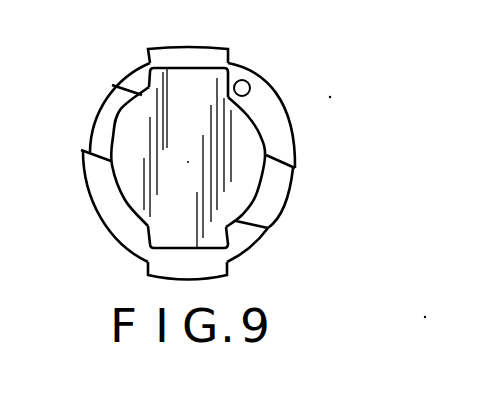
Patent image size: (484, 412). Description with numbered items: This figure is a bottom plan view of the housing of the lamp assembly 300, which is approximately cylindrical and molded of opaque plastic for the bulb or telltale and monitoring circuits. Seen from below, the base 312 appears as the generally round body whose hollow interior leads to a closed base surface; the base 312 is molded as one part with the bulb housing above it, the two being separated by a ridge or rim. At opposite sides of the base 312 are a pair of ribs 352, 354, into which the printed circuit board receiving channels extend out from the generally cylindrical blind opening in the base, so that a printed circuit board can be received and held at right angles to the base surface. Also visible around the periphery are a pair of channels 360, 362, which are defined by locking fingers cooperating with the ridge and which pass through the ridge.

The lamp assembly 300 is at (285, 95).
The base 312 is at (243, 183).
The rib 352 is at (226, 233).
The rib 354 is at (231, 70).
The channel 360 is at (113, 111).
The channel 362 is at (277, 173).